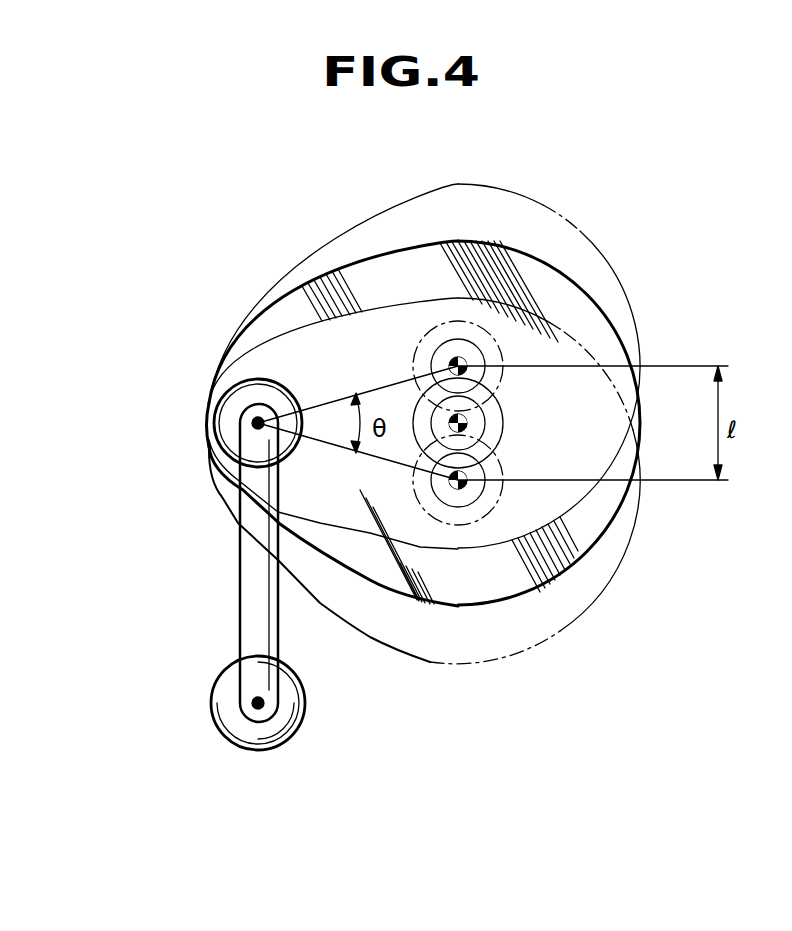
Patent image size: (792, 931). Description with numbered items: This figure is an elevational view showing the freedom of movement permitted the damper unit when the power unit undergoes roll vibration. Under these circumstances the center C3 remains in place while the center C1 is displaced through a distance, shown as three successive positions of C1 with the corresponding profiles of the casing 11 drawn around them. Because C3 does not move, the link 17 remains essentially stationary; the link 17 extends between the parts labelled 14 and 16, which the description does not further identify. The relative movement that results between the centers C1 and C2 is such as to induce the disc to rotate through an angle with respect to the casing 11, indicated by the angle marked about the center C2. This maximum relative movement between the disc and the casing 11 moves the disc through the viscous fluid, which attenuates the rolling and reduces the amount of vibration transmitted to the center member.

The casing 11 is at (509, 191).
The roller at pivot C2 14 is at (233, 386).
The roller at C3 16 is at (236, 742).
The link 17 is at (239, 567).
The center C1 is at (466, 474).
The center C2 is at (258, 423).
The center C3 is at (303, 724).